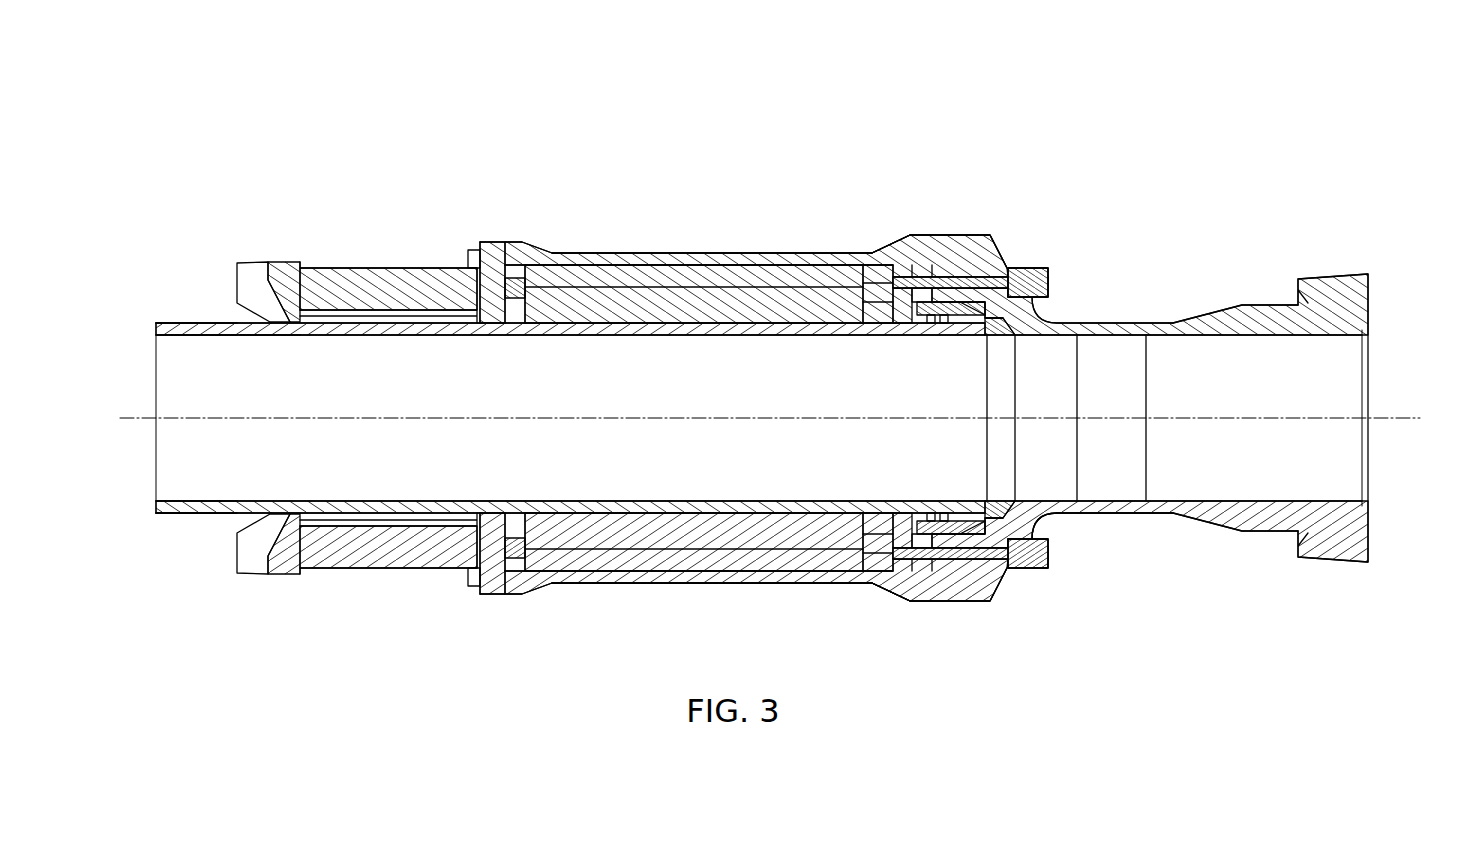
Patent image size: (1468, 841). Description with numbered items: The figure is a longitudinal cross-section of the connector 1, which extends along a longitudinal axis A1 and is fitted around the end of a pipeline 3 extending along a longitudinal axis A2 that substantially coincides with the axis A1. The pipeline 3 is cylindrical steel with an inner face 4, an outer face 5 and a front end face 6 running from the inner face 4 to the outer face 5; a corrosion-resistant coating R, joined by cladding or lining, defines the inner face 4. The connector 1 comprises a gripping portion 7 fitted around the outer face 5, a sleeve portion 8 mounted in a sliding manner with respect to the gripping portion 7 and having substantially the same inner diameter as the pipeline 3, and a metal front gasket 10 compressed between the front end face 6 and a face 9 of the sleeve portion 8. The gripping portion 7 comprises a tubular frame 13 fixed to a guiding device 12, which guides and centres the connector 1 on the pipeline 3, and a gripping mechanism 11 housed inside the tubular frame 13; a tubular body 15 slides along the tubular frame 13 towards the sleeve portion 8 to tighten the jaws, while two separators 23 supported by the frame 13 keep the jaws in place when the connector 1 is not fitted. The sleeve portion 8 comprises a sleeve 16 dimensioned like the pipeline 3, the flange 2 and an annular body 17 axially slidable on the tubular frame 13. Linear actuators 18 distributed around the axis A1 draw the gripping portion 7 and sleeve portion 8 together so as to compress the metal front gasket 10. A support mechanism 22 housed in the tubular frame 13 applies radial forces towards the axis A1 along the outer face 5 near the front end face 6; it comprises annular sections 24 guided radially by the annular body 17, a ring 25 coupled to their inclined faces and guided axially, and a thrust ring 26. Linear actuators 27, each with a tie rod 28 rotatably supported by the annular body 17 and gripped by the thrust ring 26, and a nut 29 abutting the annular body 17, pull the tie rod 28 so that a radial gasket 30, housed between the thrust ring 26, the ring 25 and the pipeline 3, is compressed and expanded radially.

The connector 1 is at (1168, 118).
The flange 2 is at (1366, 270).
The pipeline 3 is at (175, 298).
The inner face 4 is at (460, 335).
The outer face 5 is at (203, 322).
The front end face 6 is at (995, 500).
The gripping portion 7 is at (697, 250).
The sleeve portion 8 is at (1218, 282).
The face 9 is at (987, 334).
The metal front gasket 10 is at (1000, 437).
The gripping mechanism 11 is at (640, 575).
The guiding device 12 is at (375, 258).
The tubular frame 13 is at (785, 250).
The tubular body 15 is at (581, 270).
The sleeve 16 is at (1130, 520).
The annular body 17 is at (957, 236).
The linear actuators 18 is at (1096, 285).
The support mechanism 22 is at (920, 345).
The separators 23 is at (665, 310).
The annular sections 24 is at (1053, 520).
The ring 25 is at (940, 316).
The thrust ring 26 is at (900, 322).
The linear actuators 27 is at (1050, 212).
The tie rod 28 is at (920, 642).
The nut 29 is at (1020, 270).
The radial gasket 30 is at (920, 322).
The longitudinal axis A1 is at (1405, 410).
The longitudinal axis A2 is at (128, 410).
The coating R is at (255, 335).